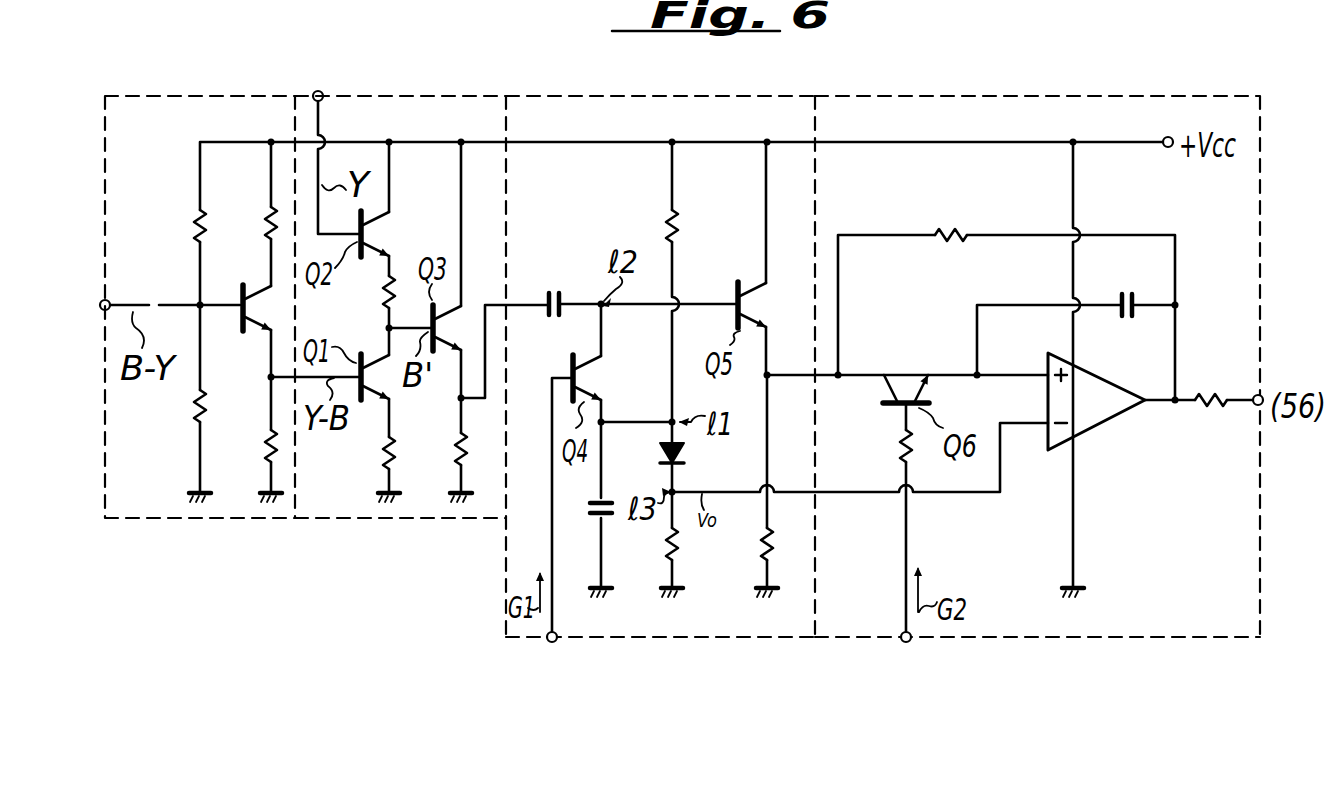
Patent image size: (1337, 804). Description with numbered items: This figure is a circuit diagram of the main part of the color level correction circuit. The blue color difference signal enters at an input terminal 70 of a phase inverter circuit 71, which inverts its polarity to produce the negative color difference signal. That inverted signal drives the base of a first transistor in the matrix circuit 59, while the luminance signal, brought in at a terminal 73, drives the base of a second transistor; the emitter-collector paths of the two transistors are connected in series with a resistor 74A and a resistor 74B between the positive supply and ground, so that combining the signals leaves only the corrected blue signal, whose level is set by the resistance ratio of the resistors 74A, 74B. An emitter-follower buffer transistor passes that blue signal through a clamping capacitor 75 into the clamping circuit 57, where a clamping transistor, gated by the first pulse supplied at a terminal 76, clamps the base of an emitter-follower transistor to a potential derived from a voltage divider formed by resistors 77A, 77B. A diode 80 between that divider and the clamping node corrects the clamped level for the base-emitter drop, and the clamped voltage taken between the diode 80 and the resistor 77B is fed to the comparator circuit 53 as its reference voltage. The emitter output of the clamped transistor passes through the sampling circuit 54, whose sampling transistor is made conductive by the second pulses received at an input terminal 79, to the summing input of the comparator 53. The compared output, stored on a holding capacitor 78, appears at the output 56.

The input terminal 70 is at (103, 310).
The phase inverter circuit 71 is at (232, 96).
The Y signal input terminal 73 is at (323, 92).
The matrix circuit 59 is at (450, 96).
The clamping circuit 57 is at (700, 92).
The sampling circuit 54 is at (1037, 366).
The resistor 74A is at (388, 291).
The resistor 74B is at (388, 464).
The clamping capacitor 75 is at (558, 292).
The resistor 77A is at (677, 230).
The resistor 77B is at (680, 548).
The diode 80 is at (686, 456).
The holding capacitor 78 is at (1127, 294).
The comparator circuit 53 is at (1127, 388).
The output terminal 56 is at (1229, 400).
The gate pulse G1 terminal 76 is at (557, 638).
The input terminal 79 is at (908, 639).